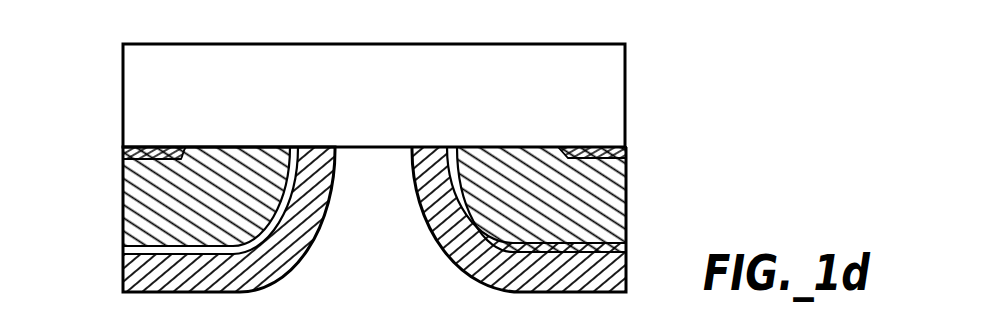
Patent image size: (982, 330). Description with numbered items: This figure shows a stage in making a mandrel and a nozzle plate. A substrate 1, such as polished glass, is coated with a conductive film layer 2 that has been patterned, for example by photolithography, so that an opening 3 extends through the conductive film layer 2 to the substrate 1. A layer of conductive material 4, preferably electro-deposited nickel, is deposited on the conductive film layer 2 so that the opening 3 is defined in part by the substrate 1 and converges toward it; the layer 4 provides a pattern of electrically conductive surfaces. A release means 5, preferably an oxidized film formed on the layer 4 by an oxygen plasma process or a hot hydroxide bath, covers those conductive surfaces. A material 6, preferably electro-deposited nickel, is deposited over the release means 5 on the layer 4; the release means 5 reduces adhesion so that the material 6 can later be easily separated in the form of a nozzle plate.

The substrate 1 is at (602, 43).
The conductive film layer 2 is at (615, 153).
The opening 3 is at (359, 206).
The layer of conductive material 4 is at (624, 213).
The release means 5 is at (624, 248).
The material 6 is at (624, 274).